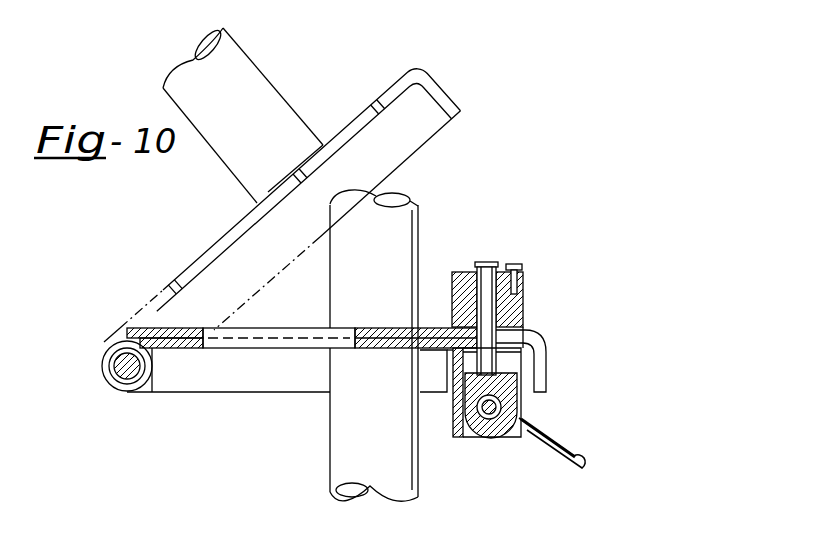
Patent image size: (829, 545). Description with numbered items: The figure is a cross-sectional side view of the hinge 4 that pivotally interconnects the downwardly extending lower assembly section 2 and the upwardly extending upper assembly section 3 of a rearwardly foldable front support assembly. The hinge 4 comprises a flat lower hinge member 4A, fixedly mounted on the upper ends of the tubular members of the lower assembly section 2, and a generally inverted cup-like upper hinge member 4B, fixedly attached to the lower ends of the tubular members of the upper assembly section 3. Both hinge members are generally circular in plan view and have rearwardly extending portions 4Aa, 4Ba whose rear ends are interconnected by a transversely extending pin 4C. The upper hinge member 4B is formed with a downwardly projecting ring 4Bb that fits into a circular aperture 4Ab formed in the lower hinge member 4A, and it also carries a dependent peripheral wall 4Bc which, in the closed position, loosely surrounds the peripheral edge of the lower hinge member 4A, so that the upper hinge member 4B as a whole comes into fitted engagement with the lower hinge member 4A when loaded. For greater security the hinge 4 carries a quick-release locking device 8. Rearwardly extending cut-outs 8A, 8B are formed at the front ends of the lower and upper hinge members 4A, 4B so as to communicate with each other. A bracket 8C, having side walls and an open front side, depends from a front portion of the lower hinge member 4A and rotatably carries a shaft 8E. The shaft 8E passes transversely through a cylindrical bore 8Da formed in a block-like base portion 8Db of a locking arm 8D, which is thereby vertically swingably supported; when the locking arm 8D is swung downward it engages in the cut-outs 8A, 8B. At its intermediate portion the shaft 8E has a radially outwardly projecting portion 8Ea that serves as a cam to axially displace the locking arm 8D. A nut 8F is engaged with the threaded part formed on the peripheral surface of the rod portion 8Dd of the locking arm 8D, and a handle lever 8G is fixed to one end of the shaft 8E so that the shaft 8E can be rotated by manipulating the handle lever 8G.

The lower assembly section 2 is at (326, 439).
The upper assembly section 3 is at (290, 88).
The hinge 4 is at (255, 402).
The lower hinge member 4A is at (435, 360).
The rearwardly extending portion of lower hinge member 4Aa is at (167, 344).
The circular aperture 4Ab is at (232, 333).
The upper hinge member 4B is at (435, 319).
The rearwardly extending portion of upper hinge member 4Ba is at (157, 327).
The downwardly projecting ring 4Bb is at (200, 341).
The dependent peripheral wall 4Bc is at (447, 88).
The pin 4C is at (121, 348).
The locking device 8 is at (526, 297).
The cut-out in lower hinge member 8A is at (543, 344).
The cut-out in upper hinge member 8B is at (525, 325).
The bracket 8C is at (465, 447).
The locking arm 8D is at (539, 254).
The cylindrical bore 8Da is at (481, 422).
The block-like base portion 8Db is at (517, 380).
The rod portion 8Dd is at (486, 296).
The shaft 8E is at (512, 438).
The radially outwardly projecting portion 8Ea is at (597, 407).
The nut 8F is at (453, 276).
The handle lever 8G is at (577, 466).